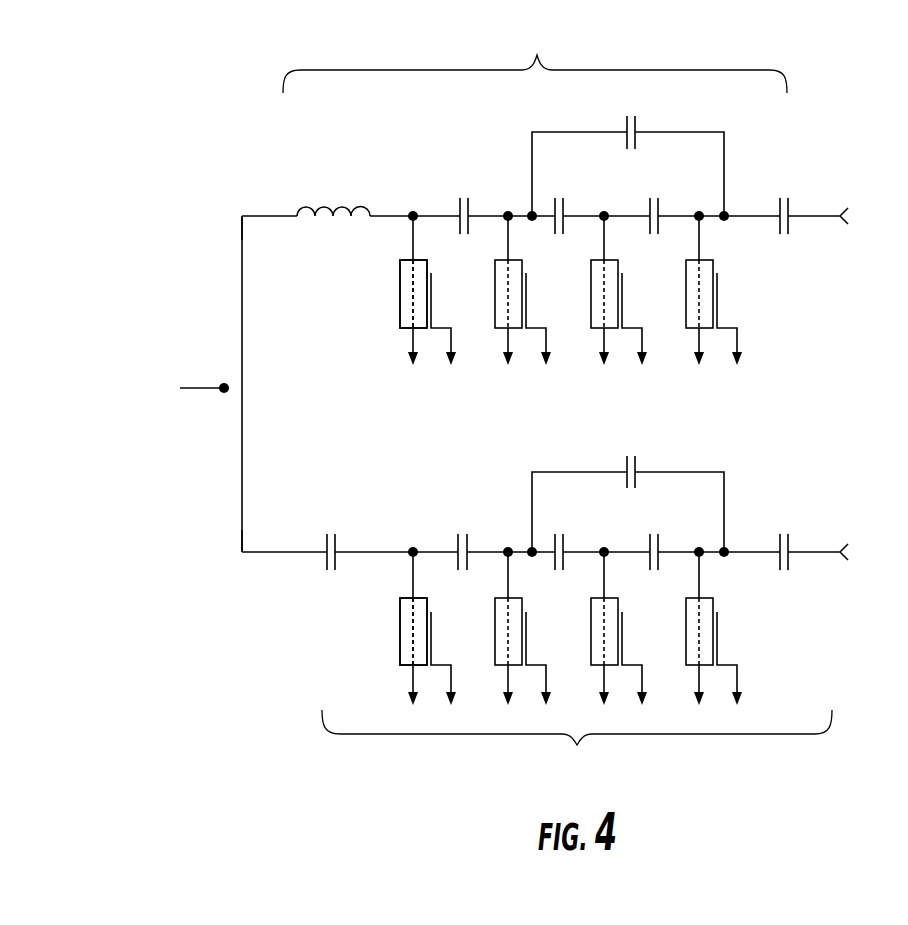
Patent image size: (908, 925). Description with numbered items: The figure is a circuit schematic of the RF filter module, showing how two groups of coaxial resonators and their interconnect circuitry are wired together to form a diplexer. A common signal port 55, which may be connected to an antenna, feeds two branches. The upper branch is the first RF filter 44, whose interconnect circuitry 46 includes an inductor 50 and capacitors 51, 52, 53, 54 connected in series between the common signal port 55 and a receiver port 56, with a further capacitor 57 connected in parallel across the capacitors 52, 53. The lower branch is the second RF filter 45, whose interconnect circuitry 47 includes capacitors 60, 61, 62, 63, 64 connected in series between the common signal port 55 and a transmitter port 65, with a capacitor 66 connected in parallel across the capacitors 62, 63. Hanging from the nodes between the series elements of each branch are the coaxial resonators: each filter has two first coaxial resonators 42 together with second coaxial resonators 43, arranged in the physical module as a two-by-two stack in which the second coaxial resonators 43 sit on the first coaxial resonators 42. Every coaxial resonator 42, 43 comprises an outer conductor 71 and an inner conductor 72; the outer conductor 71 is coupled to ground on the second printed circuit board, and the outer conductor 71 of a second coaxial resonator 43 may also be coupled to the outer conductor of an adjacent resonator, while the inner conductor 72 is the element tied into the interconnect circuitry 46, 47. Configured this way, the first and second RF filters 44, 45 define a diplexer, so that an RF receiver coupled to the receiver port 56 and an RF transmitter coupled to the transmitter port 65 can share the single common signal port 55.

The first coaxial resonators 42 is at (526, 460).
The second coaxial resonators 43 is at (542, 460).
The first RF filter 44 is at (535, 49).
The second RF filter 45 is at (577, 745).
The interconnect circuitry 46 is at (204, 191).
The interconnect circuitry 47 is at (207, 514).
The inductor 50 is at (323, 184).
The capacitor 51 is at (435, 189).
The capacitor 52 is at (574, 192).
The capacitor 53 is at (674, 192).
The capacitor 54 is at (813, 198).
The common signal port 55 is at (165, 363).
The receiver port 56 is at (840, 237).
The capacitor 57 is at (628, 144).
The capacitor 60 is at (350, 527).
The capacitor 61 is at (482, 527).
The capacitor 62 is at (577, 528).
The capacitor 63 is at (671, 528).
The capacitor 64 is at (800, 528).
The transmitter port 65 is at (849, 577).
The capacitor 66 is at (628, 482).
The outer conductor 71 is at (384, 448).
The inner conductor 72 is at (377, 462).